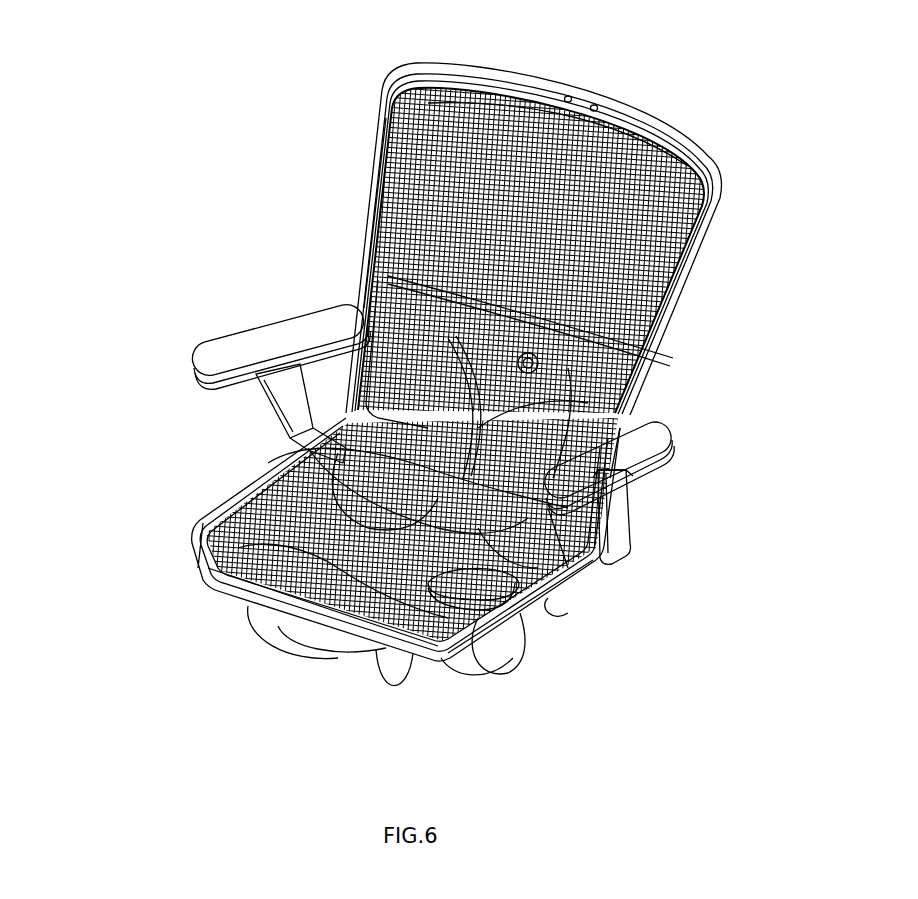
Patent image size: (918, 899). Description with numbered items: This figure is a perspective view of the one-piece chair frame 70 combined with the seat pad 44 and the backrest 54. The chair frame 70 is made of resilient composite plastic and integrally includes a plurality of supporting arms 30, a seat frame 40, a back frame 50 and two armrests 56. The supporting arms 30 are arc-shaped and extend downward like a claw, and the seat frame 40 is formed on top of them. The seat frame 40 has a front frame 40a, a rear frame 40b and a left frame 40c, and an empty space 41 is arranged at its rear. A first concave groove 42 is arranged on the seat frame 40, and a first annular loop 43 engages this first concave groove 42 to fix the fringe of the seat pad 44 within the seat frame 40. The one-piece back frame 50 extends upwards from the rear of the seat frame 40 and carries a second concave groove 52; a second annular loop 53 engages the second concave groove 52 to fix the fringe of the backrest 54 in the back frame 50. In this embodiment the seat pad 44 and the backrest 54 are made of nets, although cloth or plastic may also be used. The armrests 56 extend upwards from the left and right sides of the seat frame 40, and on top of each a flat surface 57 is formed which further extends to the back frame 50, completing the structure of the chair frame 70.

The one-piece chair frame 70 is at (149, 157).
The back frame 50 is at (712, 173).
The backrest 54 is at (527, 113).
The second annular loop 53 is at (377, 140).
The second concave groove 52 is at (325, 201).
The empty space 41 is at (440, 445).
The seat frame 40 is at (260, 450).
The seat pad 44 is at (245, 467).
The first annular loop 43 is at (183, 540).
The first concave groove 42 is at (135, 551).
The front frame 40a is at (300, 607).
The rear frame 40b is at (617, 387).
The left frame 40c is at (530, 587).
The flat surface 57 is at (607, 432).
The armrest 56 is at (613, 523).
The supporting arm 30 is at (382, 670).